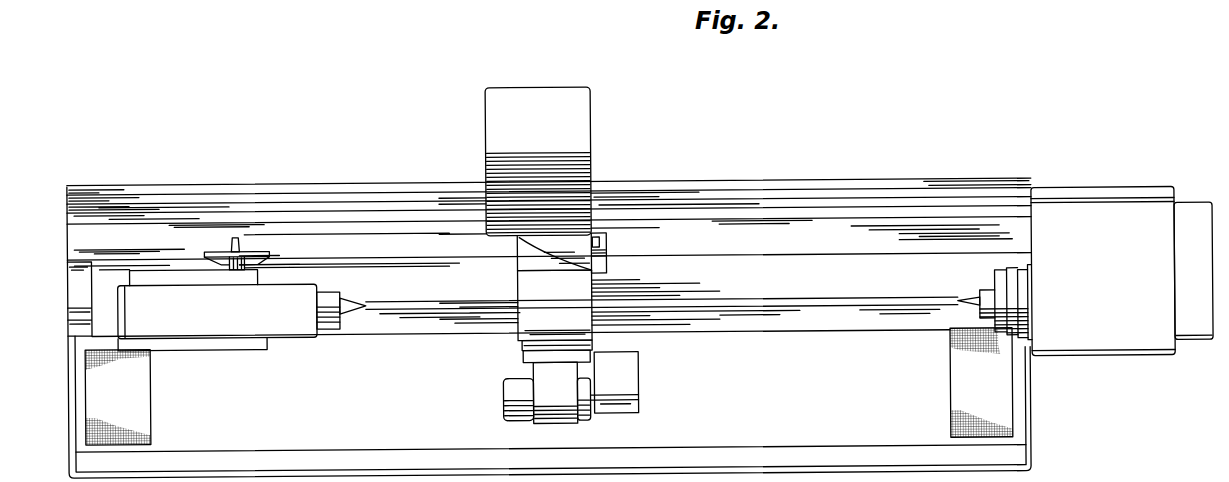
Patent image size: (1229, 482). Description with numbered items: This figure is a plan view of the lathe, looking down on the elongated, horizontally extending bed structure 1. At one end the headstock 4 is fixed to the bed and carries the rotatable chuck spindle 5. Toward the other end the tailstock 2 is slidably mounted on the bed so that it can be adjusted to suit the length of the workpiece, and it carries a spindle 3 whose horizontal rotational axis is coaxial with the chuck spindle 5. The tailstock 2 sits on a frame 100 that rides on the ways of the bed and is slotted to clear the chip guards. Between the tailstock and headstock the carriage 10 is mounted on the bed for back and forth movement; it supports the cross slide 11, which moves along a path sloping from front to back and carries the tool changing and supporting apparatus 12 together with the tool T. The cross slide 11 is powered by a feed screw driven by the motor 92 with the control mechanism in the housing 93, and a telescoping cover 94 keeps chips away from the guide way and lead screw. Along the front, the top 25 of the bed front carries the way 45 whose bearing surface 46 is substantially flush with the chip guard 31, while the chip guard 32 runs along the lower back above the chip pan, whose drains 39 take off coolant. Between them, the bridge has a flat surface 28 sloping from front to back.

The bed structure 1 is at (788, 184).
The tailstock 2 is at (232, 329).
The spindle 3 is at (345, 319).
The headstock 4 is at (1104, 360).
The chuck spindle 5 is at (971, 299).
The carriage 10 is at (520, 350).
The cross slide 11 is at (518, 281).
The tool changing and supporting apparatus 12 is at (520, 241).
The top of the front 25 is at (900, 187).
The flat surface 28 is at (855, 293).
The chip guard 31 is at (882, 249).
The chip guard 32 is at (820, 333).
The drains 39 is at (137, 404).
The way 45 is at (323, 191).
The bearing surface 46 is at (374, 198).
The motor 92 is at (561, 424).
The housing 93 is at (634, 377).
The telescoping cover 94 is at (545, 345).
The frame 100 is at (170, 344).
The tool T is at (608, 274).